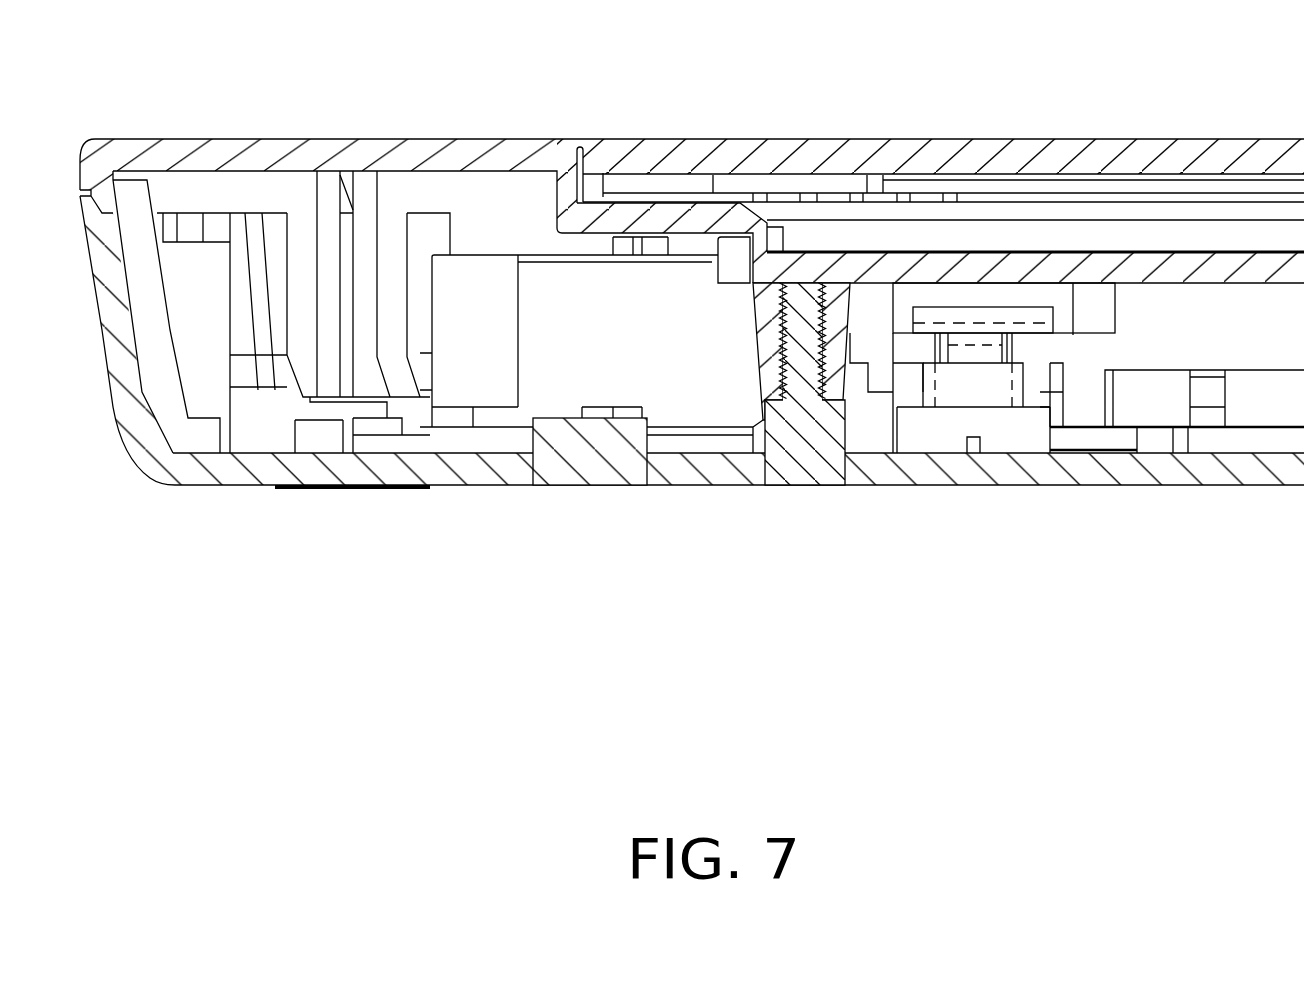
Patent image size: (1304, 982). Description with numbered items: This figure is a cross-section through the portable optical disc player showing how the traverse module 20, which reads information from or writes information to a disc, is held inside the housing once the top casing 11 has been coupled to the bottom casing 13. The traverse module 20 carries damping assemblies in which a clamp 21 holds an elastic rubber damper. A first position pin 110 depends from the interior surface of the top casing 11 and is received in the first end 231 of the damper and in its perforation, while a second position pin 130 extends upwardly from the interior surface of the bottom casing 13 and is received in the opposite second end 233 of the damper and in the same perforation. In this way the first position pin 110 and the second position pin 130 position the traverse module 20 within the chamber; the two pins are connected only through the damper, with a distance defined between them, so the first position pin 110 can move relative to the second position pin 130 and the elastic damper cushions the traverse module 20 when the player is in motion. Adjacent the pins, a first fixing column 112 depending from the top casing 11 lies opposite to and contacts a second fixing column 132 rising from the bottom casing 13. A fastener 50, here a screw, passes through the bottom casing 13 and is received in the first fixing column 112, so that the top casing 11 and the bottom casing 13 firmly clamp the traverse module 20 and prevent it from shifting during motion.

The top casing 11 is at (342, 139).
The bottom casing 13 is at (1090, 465).
The traverse module 20 is at (485, 352).
The clamp 21 is at (907, 353).
The fastener 50 is at (812, 462).
The first position pin 110 is at (997, 293).
The first fixing column 112 is at (778, 348).
The second position pin 130 is at (918, 435).
The second fixing column 132 is at (772, 363).
The first end 231 is at (1047, 317).
The second end 233 is at (1033, 395).